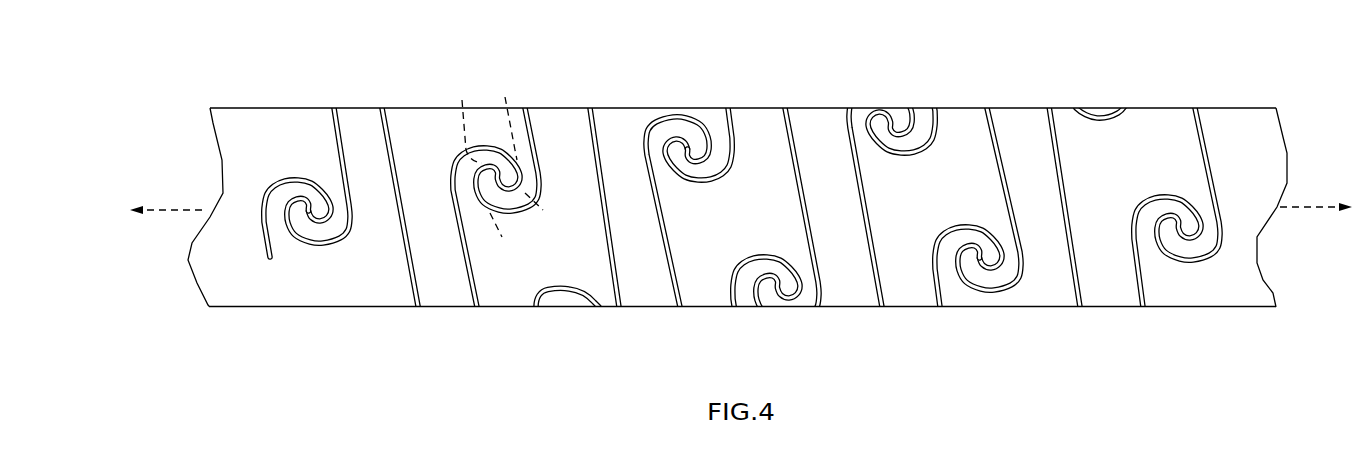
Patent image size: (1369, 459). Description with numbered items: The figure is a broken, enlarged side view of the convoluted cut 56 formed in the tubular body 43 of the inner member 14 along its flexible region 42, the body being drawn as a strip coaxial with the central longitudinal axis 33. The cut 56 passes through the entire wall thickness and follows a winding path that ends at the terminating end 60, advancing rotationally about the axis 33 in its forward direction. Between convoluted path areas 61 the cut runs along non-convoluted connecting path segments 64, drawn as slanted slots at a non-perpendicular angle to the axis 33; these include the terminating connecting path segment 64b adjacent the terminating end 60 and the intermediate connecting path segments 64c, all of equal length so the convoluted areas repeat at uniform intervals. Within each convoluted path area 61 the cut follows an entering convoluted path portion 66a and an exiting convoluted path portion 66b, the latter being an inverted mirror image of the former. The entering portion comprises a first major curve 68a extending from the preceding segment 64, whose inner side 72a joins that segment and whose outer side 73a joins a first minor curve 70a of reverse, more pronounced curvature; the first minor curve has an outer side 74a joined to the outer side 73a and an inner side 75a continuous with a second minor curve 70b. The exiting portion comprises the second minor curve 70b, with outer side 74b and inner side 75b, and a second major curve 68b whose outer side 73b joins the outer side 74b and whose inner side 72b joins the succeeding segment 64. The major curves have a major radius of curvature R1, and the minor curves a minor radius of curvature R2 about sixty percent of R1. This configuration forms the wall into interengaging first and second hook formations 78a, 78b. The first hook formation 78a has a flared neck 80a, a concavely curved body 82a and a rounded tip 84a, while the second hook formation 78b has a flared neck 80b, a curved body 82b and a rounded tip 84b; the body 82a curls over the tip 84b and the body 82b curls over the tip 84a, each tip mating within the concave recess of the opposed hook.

The inner member 14 is at (244, 86).
The central longitudinal axis 33 is at (180, 207).
The flexible region 42 is at (1180, 95).
The tubular body 43 is at (223, 120).
The convoluted cut 56 is at (403, 223).
The terminating end 60 is at (297, 218).
The convoluted path areas 61 is at (318, 175).
The connecting path segments 64 is at (394, 227).
The terminating connecting path segment 64b is at (330, 136).
The intermediate connecting path segments 64c is at (410, 272).
The entering convoluted path portion 66a is at (1000, 282).
The exiting convoluted path portion 66b is at (960, 215).
The first major curve 68a is at (995, 285).
The second major curve 68b is at (947, 245).
The first minor curve 70a is at (950, 275).
The second minor curve 70b is at (1022, 299).
The inner side of first major curve 72a is at (1030, 290).
The inner side of second major curve 72b is at (935, 257).
The outer side of first major curve 73a is at (958, 270).
The outer side of second major curve 73b is at (985, 250).
The outer side of first minor curve 74a is at (948, 258).
The outer side of second minor curve 74b is at (984, 247).
The inner side of first minor curve 75a is at (986, 248).
The inner side of second minor curve 75b is at (976, 275).
The first hook formation 78a is at (658, 108).
The second hook formation 78b is at (728, 192).
The flared neck of first hook formation 80a is at (617, 297).
The flared neck of second hook formation 80b is at (703, 110).
The curved body of first hook formation 82a is at (663, 137).
The curved body of second hook formation 82b is at (701, 180).
The rounded tip of first hook formation 84a is at (718, 157).
The rounded tip of second hook formation 84b is at (680, 148).
The major radius of curvature R1 is at (507, 159).
The minor radius of curvature R2 is at (503, 167).